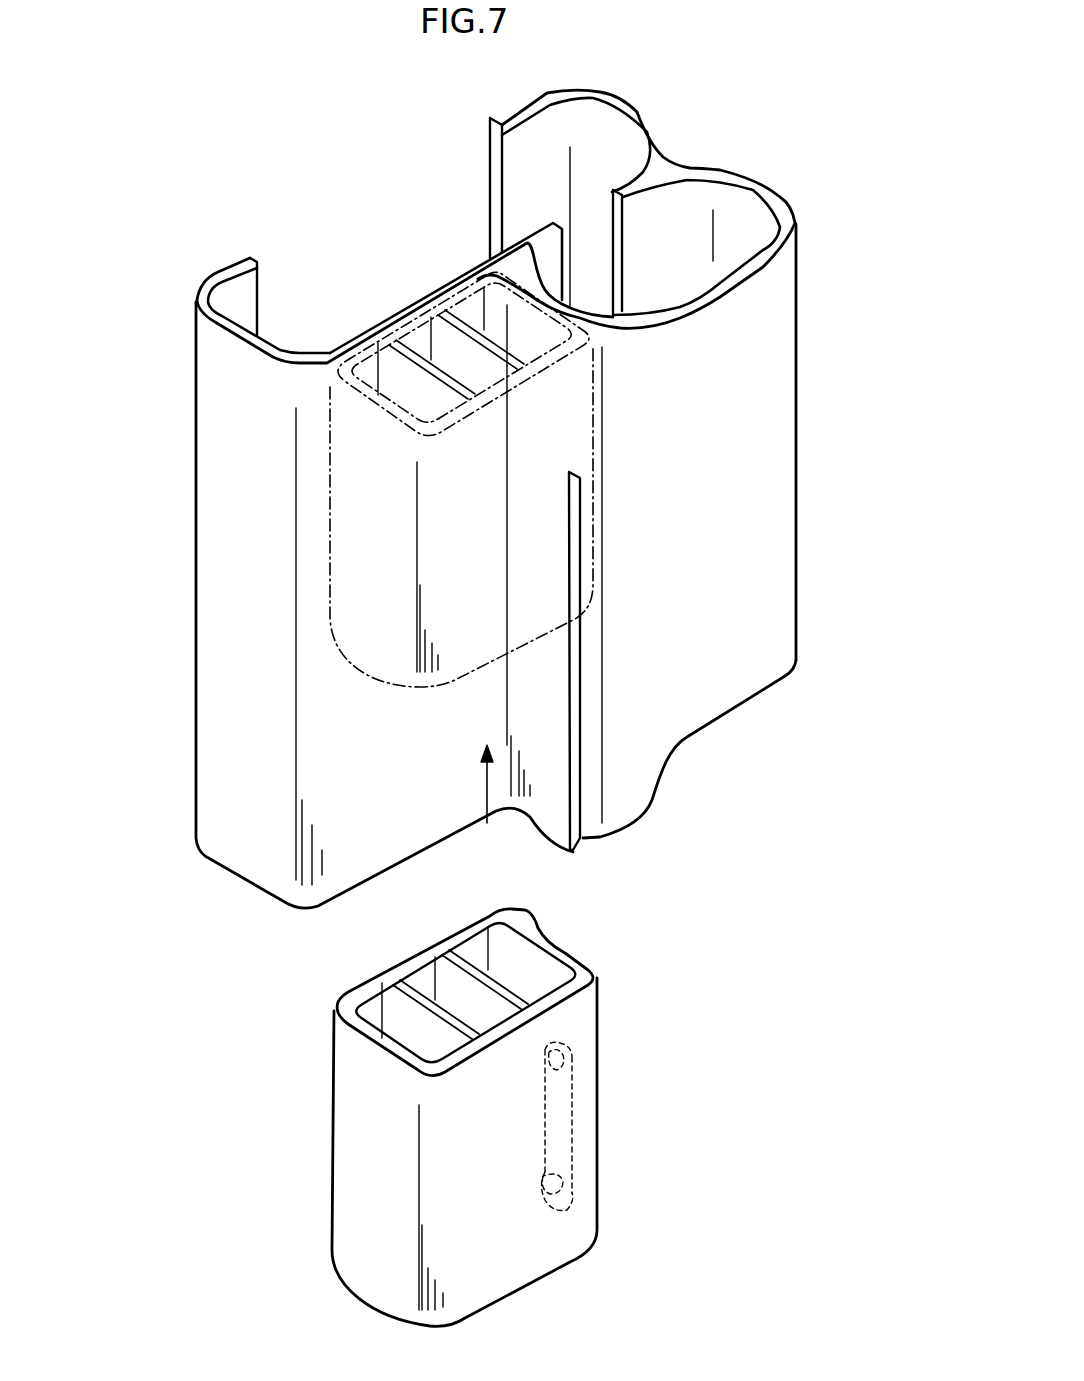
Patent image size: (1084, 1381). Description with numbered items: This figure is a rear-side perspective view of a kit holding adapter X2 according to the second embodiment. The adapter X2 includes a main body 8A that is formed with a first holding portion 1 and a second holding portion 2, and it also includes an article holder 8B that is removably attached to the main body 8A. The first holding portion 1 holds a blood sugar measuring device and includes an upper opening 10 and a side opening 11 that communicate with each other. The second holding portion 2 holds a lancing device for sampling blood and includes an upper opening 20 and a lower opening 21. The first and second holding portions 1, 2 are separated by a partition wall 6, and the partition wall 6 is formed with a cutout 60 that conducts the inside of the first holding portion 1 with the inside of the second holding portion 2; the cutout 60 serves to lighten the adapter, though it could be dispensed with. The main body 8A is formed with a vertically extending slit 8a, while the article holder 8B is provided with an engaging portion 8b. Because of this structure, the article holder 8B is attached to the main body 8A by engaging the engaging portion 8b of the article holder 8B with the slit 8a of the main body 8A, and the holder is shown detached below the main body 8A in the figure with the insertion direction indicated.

The first holding portion 1 is at (196, 596).
The second holding portion 2 is at (790, 514).
The partition wall 6 is at (527, 233).
The main body 8A is at (428, 281).
The article holder 8B is at (330, 525).
The slit 8a is at (582, 788).
The engaging portion 8b is at (570, 1127).
The upper opening 10 is at (270, 346).
The side opening 11 is at (490, 187).
The upper opening 20 is at (690, 283).
The lower opening 21 is at (725, 715).
The cutout 60 is at (613, 231).
The kit holding adapter X2 is at (345, 195).